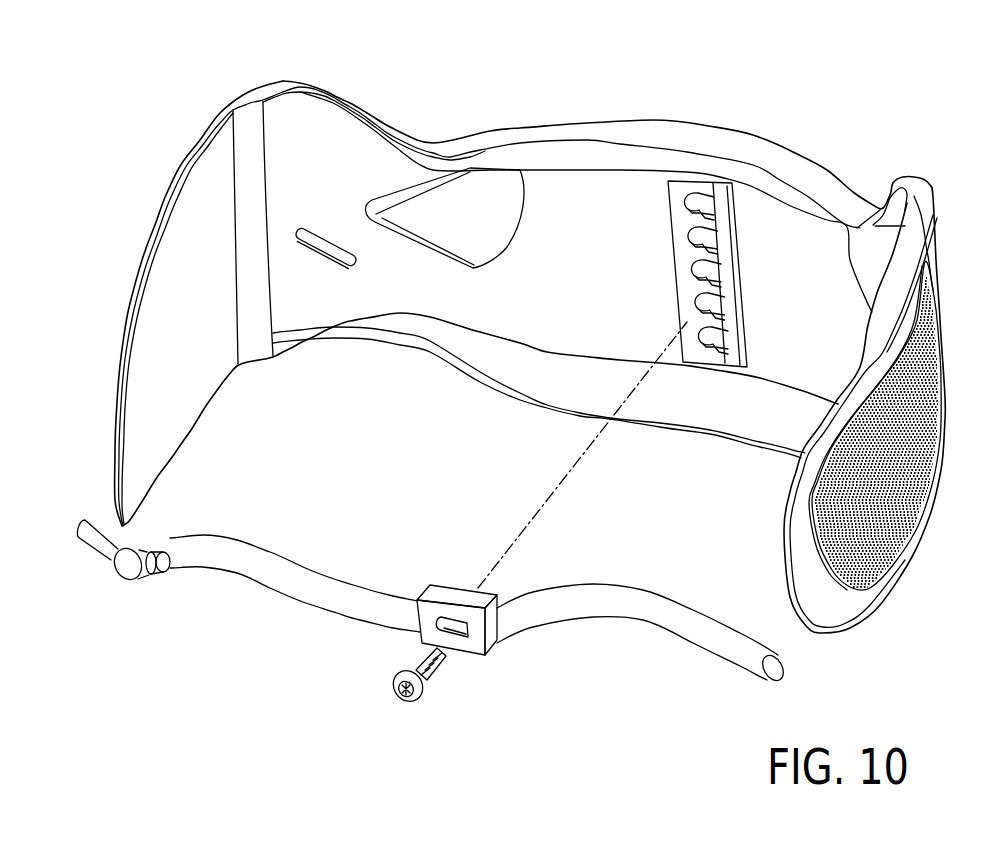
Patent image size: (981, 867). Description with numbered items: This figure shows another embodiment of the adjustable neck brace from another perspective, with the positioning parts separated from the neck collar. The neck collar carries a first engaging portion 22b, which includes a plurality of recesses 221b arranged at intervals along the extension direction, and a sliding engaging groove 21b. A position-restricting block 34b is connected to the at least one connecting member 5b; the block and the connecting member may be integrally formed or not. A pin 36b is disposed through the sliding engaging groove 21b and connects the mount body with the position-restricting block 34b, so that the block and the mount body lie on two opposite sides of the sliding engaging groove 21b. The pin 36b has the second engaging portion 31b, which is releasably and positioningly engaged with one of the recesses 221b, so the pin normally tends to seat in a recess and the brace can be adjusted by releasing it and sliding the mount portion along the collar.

The connecting member 5b is at (703, 638).
The sliding engaging groove 21b is at (710, 203).
The first engaging portion 22b is at (676, 210).
The recesses 221b is at (687, 260).
The second engaging portion 31b is at (381, 653).
The position-restricting block 34b is at (447, 590).
The pin 36b is at (393, 690).